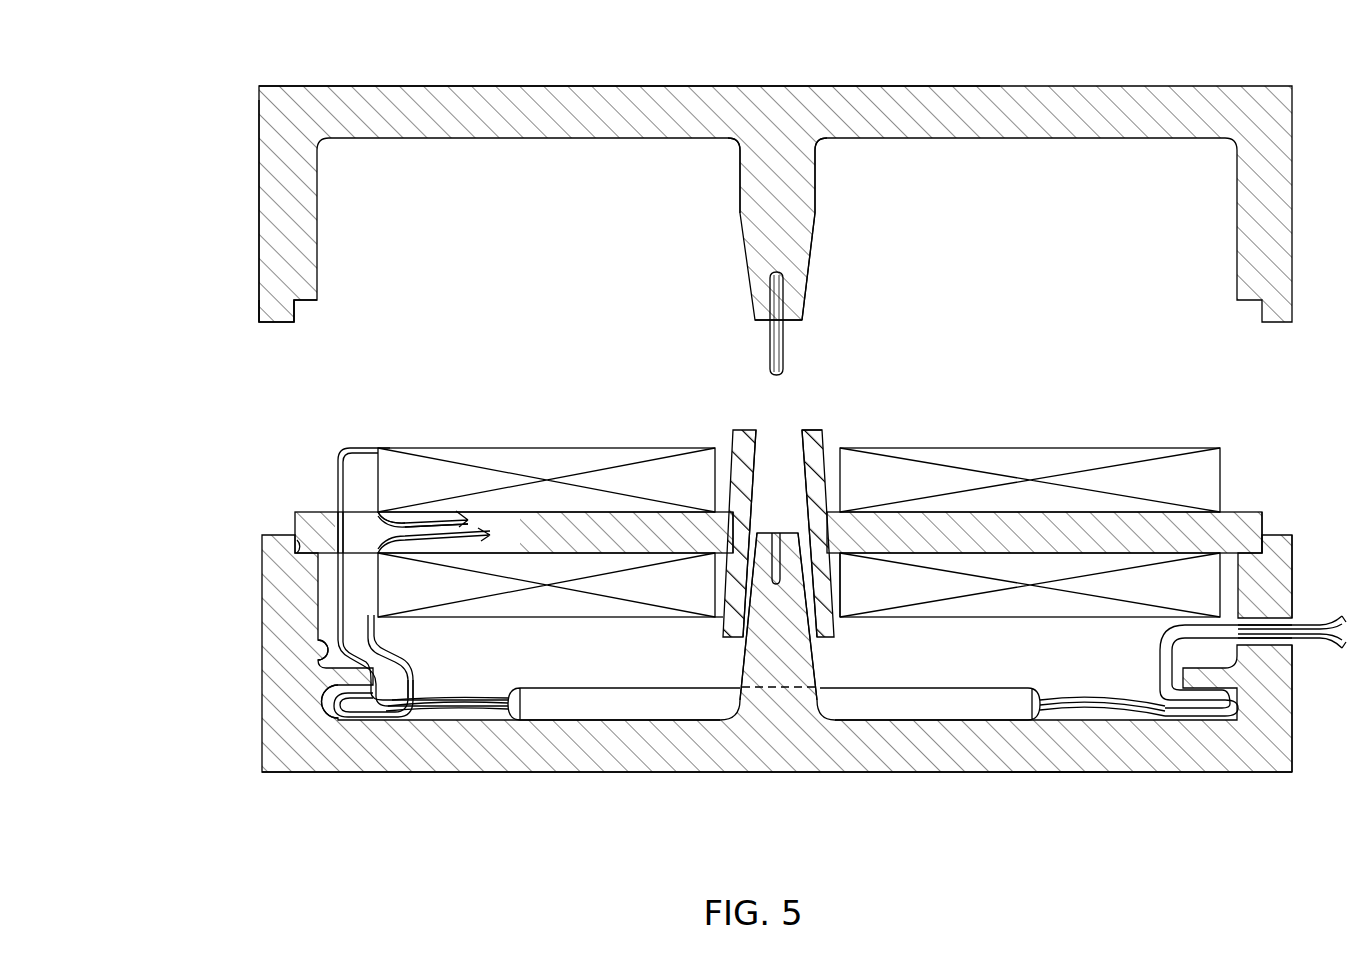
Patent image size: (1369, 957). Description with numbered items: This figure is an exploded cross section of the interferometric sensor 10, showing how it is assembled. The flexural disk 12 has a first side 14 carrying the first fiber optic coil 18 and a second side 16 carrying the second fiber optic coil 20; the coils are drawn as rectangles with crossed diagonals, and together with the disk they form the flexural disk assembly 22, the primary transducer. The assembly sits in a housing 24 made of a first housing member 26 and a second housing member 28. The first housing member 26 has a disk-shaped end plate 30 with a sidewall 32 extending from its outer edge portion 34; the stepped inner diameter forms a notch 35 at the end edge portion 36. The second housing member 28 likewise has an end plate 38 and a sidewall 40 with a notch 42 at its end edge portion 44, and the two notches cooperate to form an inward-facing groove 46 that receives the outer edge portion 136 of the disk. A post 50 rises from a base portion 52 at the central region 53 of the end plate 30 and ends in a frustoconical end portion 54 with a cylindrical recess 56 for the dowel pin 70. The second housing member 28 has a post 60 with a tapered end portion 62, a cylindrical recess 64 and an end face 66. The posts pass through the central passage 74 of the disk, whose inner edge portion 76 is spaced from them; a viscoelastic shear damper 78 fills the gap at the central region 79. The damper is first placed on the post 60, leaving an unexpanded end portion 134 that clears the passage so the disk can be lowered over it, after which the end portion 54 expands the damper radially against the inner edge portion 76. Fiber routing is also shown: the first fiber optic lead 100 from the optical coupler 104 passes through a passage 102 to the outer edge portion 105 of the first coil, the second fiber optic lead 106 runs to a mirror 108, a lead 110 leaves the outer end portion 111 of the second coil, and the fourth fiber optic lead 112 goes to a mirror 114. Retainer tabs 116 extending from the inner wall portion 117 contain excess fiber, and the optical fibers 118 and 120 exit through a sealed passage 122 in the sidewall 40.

The interferometric sensor 10 is at (1010, 848).
The flexural disk 12 is at (1130, 553).
The first side 14 is at (1068, 512).
The second side 16 is at (1058, 556).
The first fiber optic coil 18 is at (548, 448).
The second fiber optic coil 20 is at (503, 620).
The flexural disk assembly 22 is at (452, 370).
The housing 24 is at (225, 704).
The first housing member 26 is at (259, 105).
The second housing member 28 is at (262, 755).
The end plate 30 is at (525, 86).
The sidewall 32 is at (259, 215).
The outer edge portion 34 is at (300, 86).
The notch 35 is at (308, 302).
The end edge portion 36 is at (259, 305).
The end plate 38 is at (1073, 772).
The sidewall 40 is at (1292, 605).
The notch 42 is at (1252, 550).
The end edge portion 44 is at (1292, 542).
The groove 46 is at (297, 547).
The post 50 is at (815, 172).
The base portion 52 is at (740, 148).
The central region 53 is at (805, 86).
The end portion 54 is at (808, 262).
The cylindrical recess 56 is at (770, 305).
The post 60 is at (742, 665).
The end portion 62 is at (800, 567).
The cylindrical recess 64 is at (785, 570).
The end face 66 is at (740, 430).
The dowel pin 70 is at (785, 335).
The central passage 74 is at (777, 530).
The inner edge portion 76 is at (710, 538).
The shear damper 78 is at (822, 432).
The central region 79 is at (702, 593).
The first fiber optic lead 100 is at (337, 607).
The passage 102 is at (325, 517).
The optical coupler 104 is at (612, 705).
The outer edge portion 105 is at (395, 512).
The second fiber optic lead 106 is at (430, 519).
The mirror 108 is at (478, 538).
The lead 110 is at (425, 712).
The outer end portion 111 is at (400, 622).
The fourth fiber optic lead 112 is at (368, 620).
The mirror 114 is at (482, 545).
The retainer tabs 116 is at (345, 683).
The inner wall portion 117 is at (320, 648).
The optical fiber 118 is at (1117, 708).
The optical fiber 120 is at (1160, 708).
The passage 122 is at (1265, 625).
The unexpanded end portion 134 is at (810, 428).
The outer edge portion 136 is at (1247, 512).